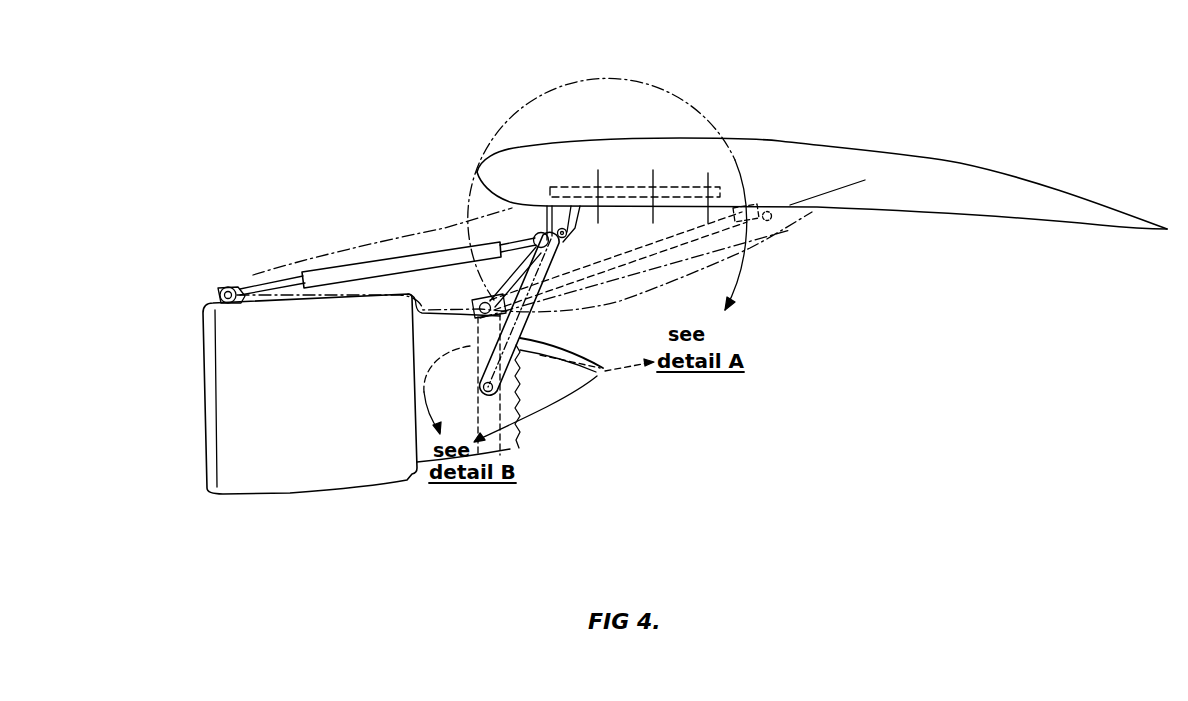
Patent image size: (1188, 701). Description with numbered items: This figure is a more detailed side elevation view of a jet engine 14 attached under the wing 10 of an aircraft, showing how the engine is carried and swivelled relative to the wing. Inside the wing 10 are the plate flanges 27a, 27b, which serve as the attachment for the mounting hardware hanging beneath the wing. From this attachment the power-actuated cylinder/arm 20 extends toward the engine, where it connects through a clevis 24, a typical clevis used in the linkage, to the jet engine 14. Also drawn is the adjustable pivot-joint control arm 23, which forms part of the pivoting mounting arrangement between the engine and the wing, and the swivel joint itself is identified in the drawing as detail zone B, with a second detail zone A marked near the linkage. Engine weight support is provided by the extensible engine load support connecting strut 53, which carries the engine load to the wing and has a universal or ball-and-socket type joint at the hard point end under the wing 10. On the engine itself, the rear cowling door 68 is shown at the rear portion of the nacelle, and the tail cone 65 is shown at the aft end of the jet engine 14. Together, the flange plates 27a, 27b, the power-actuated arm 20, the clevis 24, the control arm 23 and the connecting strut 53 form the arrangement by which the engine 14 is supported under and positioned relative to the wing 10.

The wing 10 is at (857, 160).
The jet engine/nacelle 14 is at (233, 490).
The power-actuated cylinder/arm 20 is at (333, 267).
The adjustable pivot-joint control arm 23 is at (600, 367).
The clevis 24 is at (222, 291).
The flange plate 27a is at (562, 203).
The flange plate 27b is at (575, 200).
The extensible engine load support connecting strut 53 is at (683, 251).
The tail cone 65 is at (568, 392).
The rear cowling door 68 is at (431, 335).